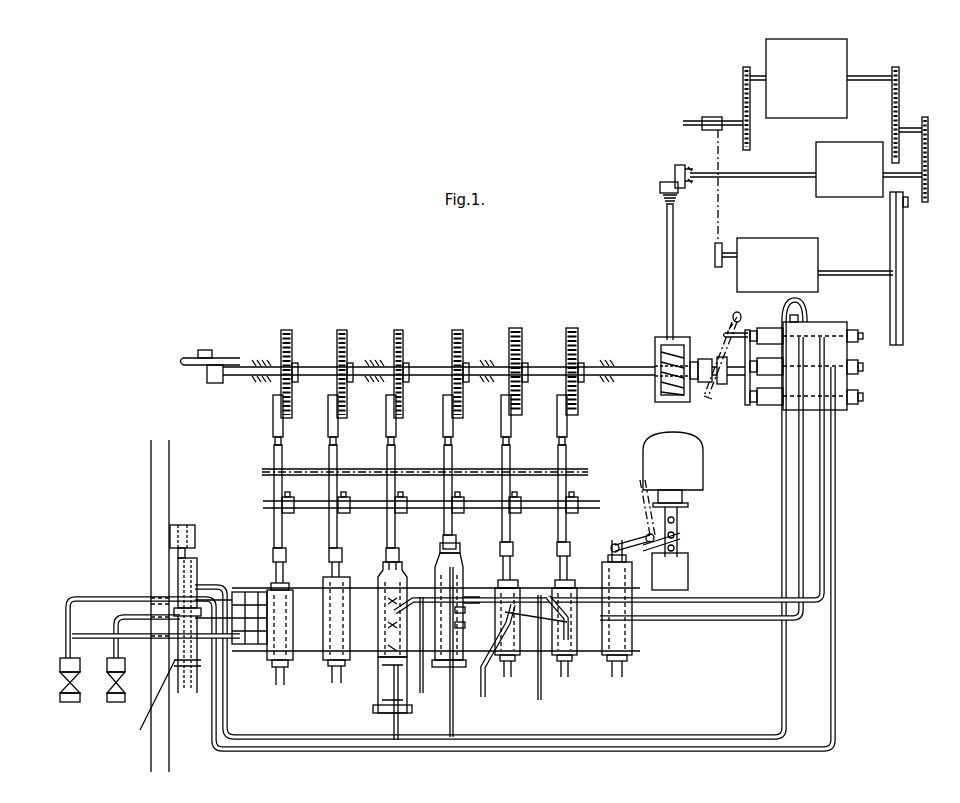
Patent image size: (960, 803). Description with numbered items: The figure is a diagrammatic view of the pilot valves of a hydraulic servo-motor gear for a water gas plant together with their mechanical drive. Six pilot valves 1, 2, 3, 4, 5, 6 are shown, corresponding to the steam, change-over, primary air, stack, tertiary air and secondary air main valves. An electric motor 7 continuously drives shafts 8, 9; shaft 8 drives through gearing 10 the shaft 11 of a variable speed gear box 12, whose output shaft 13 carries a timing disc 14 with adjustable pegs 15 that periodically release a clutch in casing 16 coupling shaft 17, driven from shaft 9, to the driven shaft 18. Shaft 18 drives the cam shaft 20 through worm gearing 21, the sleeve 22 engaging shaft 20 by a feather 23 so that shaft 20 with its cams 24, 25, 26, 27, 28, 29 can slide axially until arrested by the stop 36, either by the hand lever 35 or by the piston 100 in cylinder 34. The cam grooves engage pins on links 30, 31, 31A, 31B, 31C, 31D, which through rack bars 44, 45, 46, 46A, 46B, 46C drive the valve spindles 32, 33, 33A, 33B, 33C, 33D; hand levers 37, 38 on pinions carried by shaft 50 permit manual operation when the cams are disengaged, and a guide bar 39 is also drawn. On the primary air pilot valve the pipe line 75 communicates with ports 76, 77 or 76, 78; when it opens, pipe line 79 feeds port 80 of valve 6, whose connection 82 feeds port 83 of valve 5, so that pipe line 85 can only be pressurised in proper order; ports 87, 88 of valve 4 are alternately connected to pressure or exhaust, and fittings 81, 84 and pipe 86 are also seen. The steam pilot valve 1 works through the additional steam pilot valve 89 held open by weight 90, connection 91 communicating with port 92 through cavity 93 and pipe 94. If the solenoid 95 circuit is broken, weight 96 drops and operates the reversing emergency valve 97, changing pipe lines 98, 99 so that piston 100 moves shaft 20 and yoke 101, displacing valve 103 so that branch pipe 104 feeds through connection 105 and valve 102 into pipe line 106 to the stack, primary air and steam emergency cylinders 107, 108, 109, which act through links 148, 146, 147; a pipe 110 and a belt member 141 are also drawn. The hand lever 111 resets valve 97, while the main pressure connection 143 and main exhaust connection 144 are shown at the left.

The steam pilot valve 1 is at (295, 660).
The change-over pilot valve 2 is at (335, 666).
The primary air pilot valve 3 is at (380, 672).
The stack pilot valve 4 is at (463, 688).
The tertiary air pilot valve 5 is at (512, 662).
The secondary air pilot valve 6 is at (566, 662).
The main driving element 7 is at (800, 46).
The shaft 8 is at (757, 74).
The shaft 9 is at (870, 76).
The gearing 10 is at (743, 80).
The shaft 11 is at (720, 242).
The variable speed transmission gear box 12 is at (810, 245).
The shaft 13 is at (845, 272).
The timing disc 14 is at (903, 310).
The pegs 15 is at (908, 203).
The clutch casing 16 is at (850, 143).
The shaft 17 is at (928, 172).
The driven shaft 18 is at (765, 173).
The shaft 20 is at (612, 366).
The worm gearing 21 is at (725, 335).
The sleeve 22 is at (665, 337).
The feather 23 is at (690, 374).
The cam 24 is at (290, 335).
The cam 25 is at (347, 335).
The cam 26 is at (404, 335).
The cam 27 is at (463, 335).
The cam 28 is at (522, 333).
The cam 29 is at (580, 333).
The link 30 is at (273, 405).
The link 31 is at (328, 408).
The link 31A is at (386, 407).
The link 31B is at (443, 407).
The link 31C is at (501, 407).
The link 31D is at (557, 407).
The valve rod 32 is at (273, 560).
The valve rod 33 is at (329, 555).
The pilot valve spindle 33A is at (386, 560).
The pilot valve spindle 33B is at (443, 540).
The pilot valve spindle 33C is at (500, 545).
The pilot valve spindle 33D is at (557, 545).
The cylinder 34 is at (860, 368).
The hand lever 35 is at (710, 400).
The stop 36 is at (228, 357).
The hand lever 37 is at (294, 500).
The hand lever 38 is at (350, 500).
The guide bar 39 is at (262, 472).
The rack bar 44 is at (274, 458).
The rack bar 45 is at (337, 460).
The rack bar 46 is at (395, 460).
The rack bar 46A is at (452, 455).
The rack bar 46B is at (510, 455).
The rack bar 46C is at (566, 455).
The shaft 50 is at (268, 504).
The pipe line connection 75 is at (423, 695).
The port 76 is at (380, 627).
The port 77 is at (380, 650).
The port 78 is at (380, 603).
The pipe line 79 is at (465, 596).
The port 80 is at (572, 658).
The stem 81 is at (612, 570).
The pipe line connection 82 is at (540, 690).
The port 83 is at (525, 592).
The connector 84 is at (512, 580).
The pipe line 85 is at (453, 700).
The pipe 86 is at (415, 595).
The port 87 is at (465, 610).
The port 88 is at (465, 625).
The additional steam pilot valve 89 is at (188, 690).
The weight 90 is at (195, 535).
The connection 91 is at (148, 640).
The port 92 is at (276, 676).
The cavity 93 is at (147, 699).
The pipe 94 is at (250, 645).
The solenoid 95 is at (703, 455).
The weight 96 is at (690, 560).
The reversing emergency valve 97 is at (633, 640).
The pipe line 98 is at (720, 620).
The pipe line 99 is at (728, 598).
The hydraulic piston 100 is at (763, 366).
The yoke 101 is at (748, 330).
The valve 102 is at (830, 325).
The valve 103 is at (845, 405).
The branch pipe 104 is at (823, 455).
The connection 105 is at (850, 348).
The pipe line 106 is at (782, 492).
The stack emergency cylinder 107 is at (460, 548).
The primary air emergency cylinder 108 is at (378, 705).
The steam emergency cylinder 109 is at (198, 587).
The pipe 110 is at (836, 505).
The hand lever 111 is at (645, 525).
The belt 141 is at (903, 240).
The main hydraulic pressure connection 143 is at (116, 703).
The main exhaust connection 144 is at (72, 703).
The link 146 is at (388, 695).
The link 147 is at (176, 695).
The link 148 is at (490, 650).